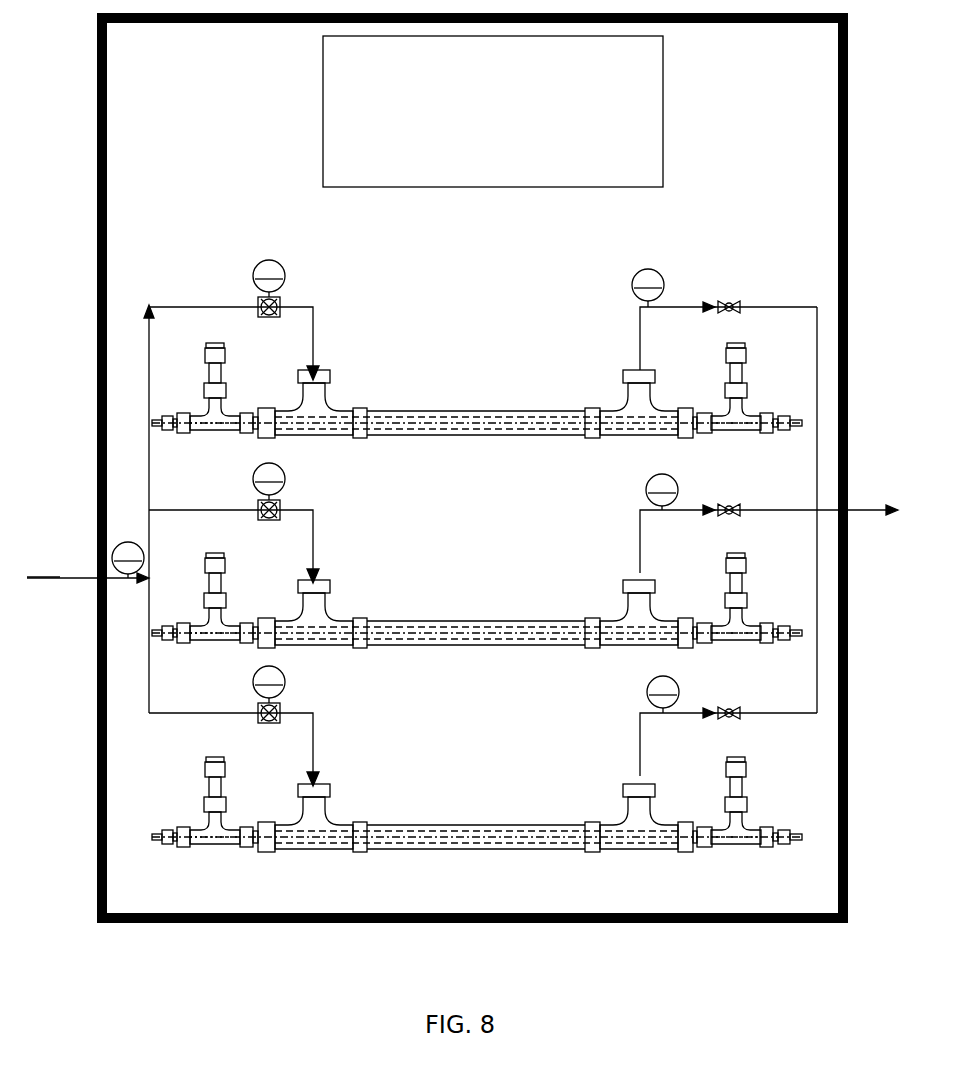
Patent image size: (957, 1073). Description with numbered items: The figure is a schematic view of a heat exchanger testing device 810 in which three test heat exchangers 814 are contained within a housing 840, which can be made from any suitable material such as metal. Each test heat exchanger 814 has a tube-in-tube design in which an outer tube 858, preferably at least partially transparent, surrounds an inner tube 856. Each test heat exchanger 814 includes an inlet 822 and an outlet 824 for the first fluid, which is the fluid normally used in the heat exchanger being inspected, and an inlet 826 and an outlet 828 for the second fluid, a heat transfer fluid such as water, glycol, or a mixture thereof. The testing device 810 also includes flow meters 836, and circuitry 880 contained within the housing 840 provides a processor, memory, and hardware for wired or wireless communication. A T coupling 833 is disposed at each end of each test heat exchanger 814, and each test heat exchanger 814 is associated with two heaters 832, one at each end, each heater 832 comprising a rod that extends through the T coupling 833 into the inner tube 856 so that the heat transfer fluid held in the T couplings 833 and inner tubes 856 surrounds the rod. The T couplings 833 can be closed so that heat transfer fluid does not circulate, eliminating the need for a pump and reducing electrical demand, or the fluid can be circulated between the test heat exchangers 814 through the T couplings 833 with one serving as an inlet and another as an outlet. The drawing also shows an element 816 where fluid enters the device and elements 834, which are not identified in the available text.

The heat exchanger testing device 810 is at (459, 531).
The test heat exchanger 814 is at (508, 413).
The inlet 816 is at (60, 577).
The inlet 822 is at (320, 371).
The outlet 824 is at (621, 371).
The inlet 826 is at (734, 353).
The outlet 828 is at (219, 356).
The heater 832 is at (159, 417).
The T coupling 833 is at (210, 433).
The pressure gauge 834 is at (118, 546).
The flow meter 836 is at (283, 278).
The housing 840 is at (688, 923).
The inner tube 856 is at (477, 425).
The outer tube 858 is at (450, 411).
The circuitry 880 is at (648, 168).